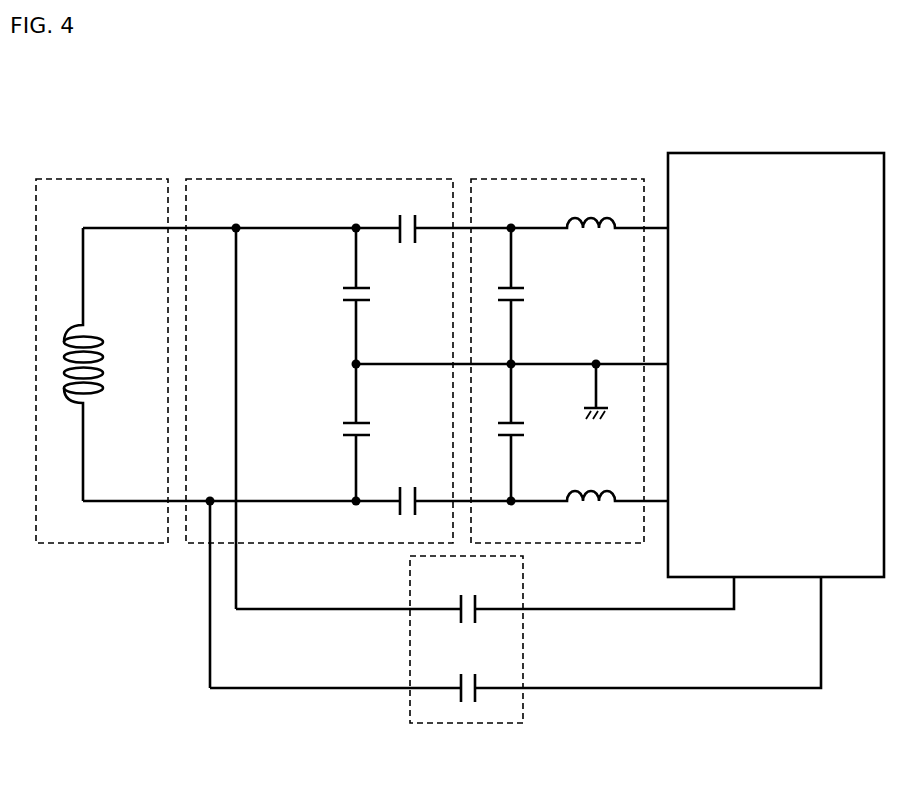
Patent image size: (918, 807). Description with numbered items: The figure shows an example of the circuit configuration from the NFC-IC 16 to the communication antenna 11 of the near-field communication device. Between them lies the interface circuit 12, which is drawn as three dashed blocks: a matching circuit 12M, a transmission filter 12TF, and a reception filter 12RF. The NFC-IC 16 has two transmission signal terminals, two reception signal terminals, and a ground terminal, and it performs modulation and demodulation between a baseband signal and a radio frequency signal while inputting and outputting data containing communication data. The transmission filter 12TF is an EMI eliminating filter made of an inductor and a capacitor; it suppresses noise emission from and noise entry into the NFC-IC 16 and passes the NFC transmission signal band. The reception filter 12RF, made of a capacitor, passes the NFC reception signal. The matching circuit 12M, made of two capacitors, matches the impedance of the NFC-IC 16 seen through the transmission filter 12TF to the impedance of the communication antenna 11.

The communication antenna 11 is at (101, 178).
The interface circuit 12 is at (308, 120).
The matching circuit 12M is at (330, 178).
The transmission filter 12TF is at (553, 178).
The reception filter 12RF is at (472, 723).
The NFC-IC 16 is at (778, 152).